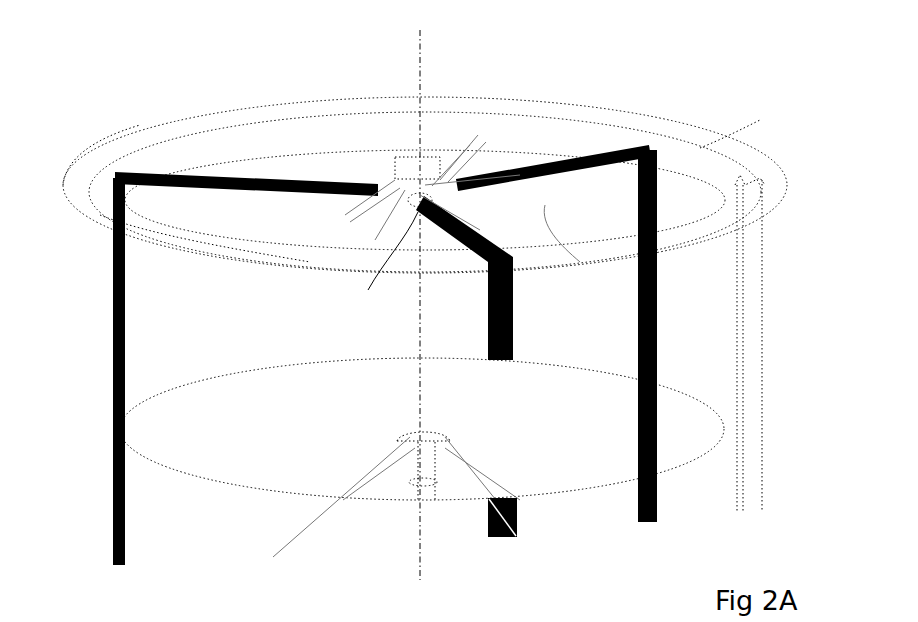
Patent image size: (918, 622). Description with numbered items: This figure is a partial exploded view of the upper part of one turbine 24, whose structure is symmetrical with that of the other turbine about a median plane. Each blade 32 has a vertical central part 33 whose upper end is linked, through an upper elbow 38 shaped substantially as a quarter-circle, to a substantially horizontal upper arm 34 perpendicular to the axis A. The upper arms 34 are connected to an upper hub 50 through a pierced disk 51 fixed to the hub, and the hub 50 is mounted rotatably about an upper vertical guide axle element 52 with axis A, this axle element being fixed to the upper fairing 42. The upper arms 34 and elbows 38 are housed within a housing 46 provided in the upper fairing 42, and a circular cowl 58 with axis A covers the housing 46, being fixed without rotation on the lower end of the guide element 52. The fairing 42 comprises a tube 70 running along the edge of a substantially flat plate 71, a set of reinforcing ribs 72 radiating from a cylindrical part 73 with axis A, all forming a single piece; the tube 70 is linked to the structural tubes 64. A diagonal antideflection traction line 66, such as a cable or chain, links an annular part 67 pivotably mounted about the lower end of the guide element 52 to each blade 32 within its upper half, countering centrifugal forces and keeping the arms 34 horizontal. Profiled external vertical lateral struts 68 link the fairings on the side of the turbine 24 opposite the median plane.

The turbine 24 is at (600, 80).
The blade 32 is at (128, 308).
The central part of the blade 33 is at (119, 350).
The upper arm 34 is at (245, 176).
The upper elbow 38 is at (118, 175).
The upper fairing 42 is at (283, 96).
The housing 46 is at (205, 215).
The upper hub 50 is at (410, 205).
The disk 51 is at (385, 205).
The upper vertical guide axle element 52 is at (382, 263).
The circular cowl 58 is at (196, 465).
The structural tube 64 is at (66, 205).
The diagonal antideflection traction line 66 is at (305, 533).
The annular part 67 is at (413, 441).
The external vertical lateral strut 68 is at (745, 272).
The tube 70 is at (710, 147).
The plate 71 is at (475, 145).
The reinforcing ribs 72 is at (545, 206).
The cylindrical part 73 is at (437, 165).
The axis A is at (420, 62).